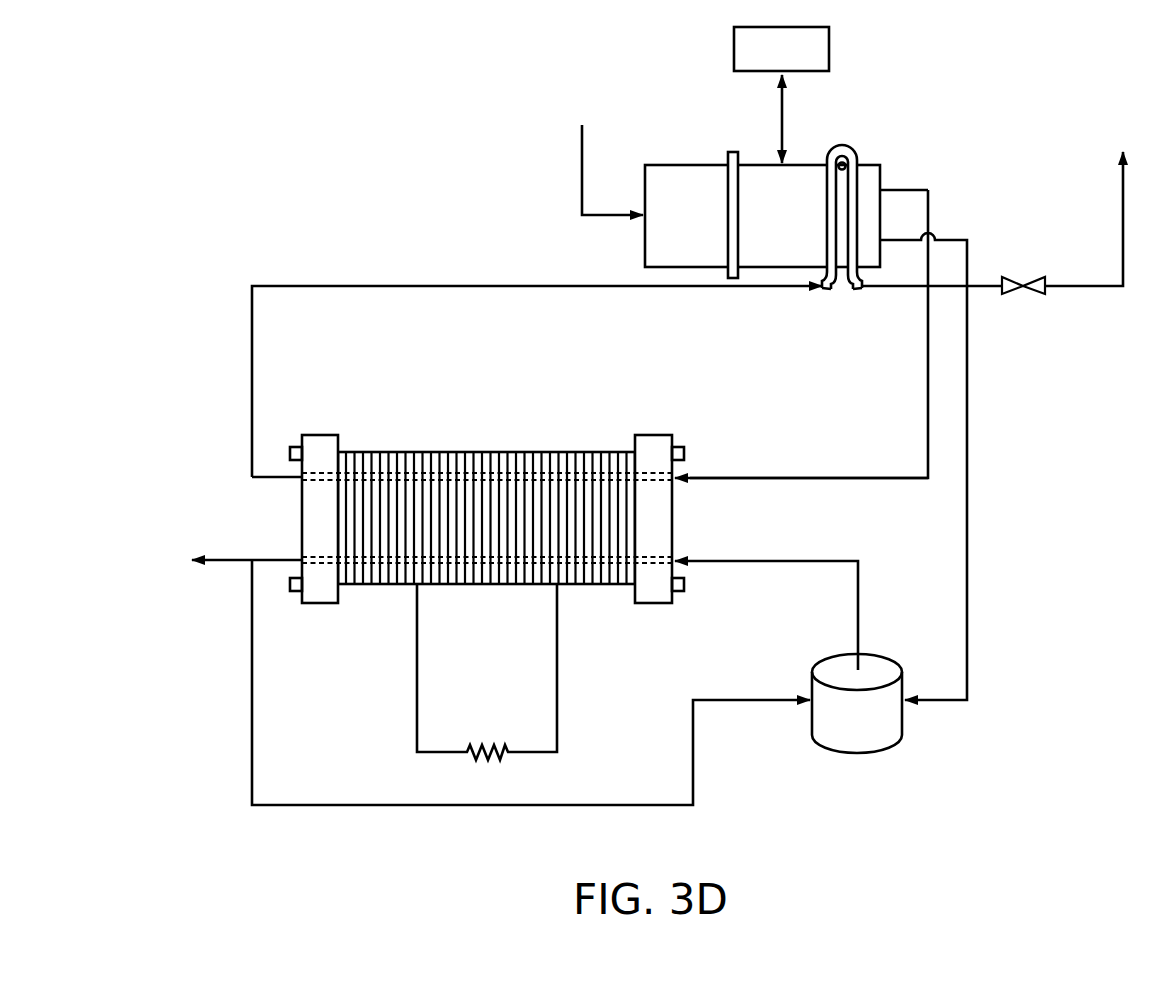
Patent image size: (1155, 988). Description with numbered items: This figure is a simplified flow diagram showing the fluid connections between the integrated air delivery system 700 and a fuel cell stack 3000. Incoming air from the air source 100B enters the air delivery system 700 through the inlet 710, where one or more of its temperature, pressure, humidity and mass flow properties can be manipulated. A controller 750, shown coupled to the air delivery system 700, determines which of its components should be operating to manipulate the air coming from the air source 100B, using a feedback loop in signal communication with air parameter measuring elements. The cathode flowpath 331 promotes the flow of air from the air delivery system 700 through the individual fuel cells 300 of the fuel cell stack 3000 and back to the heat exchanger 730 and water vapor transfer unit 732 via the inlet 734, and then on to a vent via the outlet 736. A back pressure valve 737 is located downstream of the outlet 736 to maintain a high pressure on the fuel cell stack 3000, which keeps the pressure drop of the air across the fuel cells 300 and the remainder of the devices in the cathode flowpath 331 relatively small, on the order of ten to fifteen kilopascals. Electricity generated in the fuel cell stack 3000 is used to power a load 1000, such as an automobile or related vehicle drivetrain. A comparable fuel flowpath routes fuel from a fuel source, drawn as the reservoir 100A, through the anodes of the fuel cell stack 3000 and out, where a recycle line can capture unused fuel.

The controller 750 is at (808, 64).
The air source 100B is at (548, 118).
The inlet 710 is at (645, 213).
The air delivery system 700 is at (688, 166).
The heat exchanger 730 is at (827, 245).
The water vapor transfer unit 732 is at (852, 195).
The inlet 734 is at (822, 291).
The outlet 736 is at (860, 291).
The back pressure valve 737 is at (1023, 292).
The fuel cell stack 3000 is at (433, 421).
The fuel cell 300 is at (507, 452).
The cathode flowpath 331 is at (767, 477).
The load 1000 is at (482, 746).
The first fluid reservoir 100A is at (892, 729).